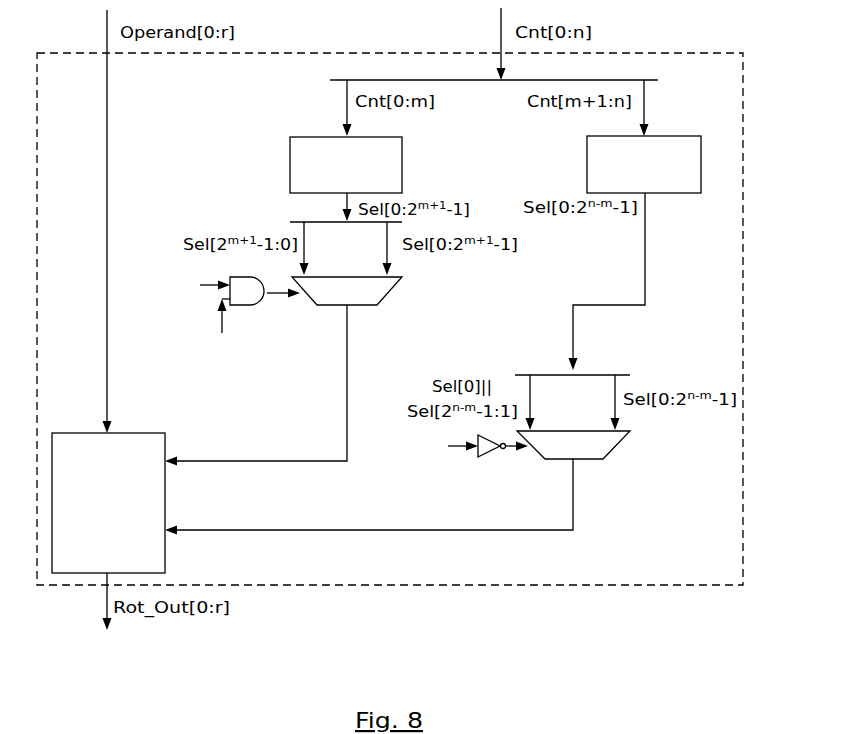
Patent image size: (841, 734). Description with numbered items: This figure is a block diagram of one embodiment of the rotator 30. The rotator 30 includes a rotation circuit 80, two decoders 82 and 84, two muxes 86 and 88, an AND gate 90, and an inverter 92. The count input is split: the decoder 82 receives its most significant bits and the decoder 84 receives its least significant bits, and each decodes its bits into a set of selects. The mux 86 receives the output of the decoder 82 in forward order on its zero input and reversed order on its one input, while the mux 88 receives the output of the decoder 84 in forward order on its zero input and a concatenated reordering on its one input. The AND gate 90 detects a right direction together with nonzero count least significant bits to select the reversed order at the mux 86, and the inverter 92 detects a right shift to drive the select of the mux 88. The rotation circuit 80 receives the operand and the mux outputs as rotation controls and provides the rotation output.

The rotator 30 is at (390, 319).
The rotation circuit 80 is at (108, 503).
The decoder 82 is at (346, 165).
The decoder 84 is at (644, 164).
The mux 86 is at (374, 296).
The mux 88 is at (602, 450).
The AND gate 90 is at (238, 315).
The inverter 92 is at (487, 462).